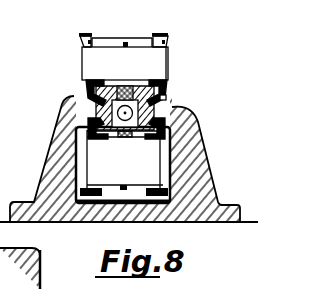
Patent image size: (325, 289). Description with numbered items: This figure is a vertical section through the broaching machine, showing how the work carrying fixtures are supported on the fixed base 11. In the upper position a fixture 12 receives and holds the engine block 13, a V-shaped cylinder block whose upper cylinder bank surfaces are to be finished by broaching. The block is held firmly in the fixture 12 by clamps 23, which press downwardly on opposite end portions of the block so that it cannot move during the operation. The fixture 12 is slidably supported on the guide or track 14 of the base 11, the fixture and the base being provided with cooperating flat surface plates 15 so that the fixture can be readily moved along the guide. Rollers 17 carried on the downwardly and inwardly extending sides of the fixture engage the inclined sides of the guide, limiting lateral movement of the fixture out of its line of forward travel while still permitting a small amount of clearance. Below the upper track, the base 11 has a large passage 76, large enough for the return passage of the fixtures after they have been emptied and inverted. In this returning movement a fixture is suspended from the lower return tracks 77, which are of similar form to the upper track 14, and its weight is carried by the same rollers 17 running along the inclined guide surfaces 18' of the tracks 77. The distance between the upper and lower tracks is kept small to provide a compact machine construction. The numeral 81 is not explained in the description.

The fixed base 11 is at (192, 141).
The fixture 12 is at (163, 58).
The engine block 13 is at (117, 40).
The clamps 23 is at (90, 33).
The flat surface plates 15 is at (168, 80).
The guide or track 14 is at (168, 90).
The slot 81 is at (183, 103).
The lower return tracks 77 is at (185, 118).
The rollers 17 is at (92, 125).
The inclined guide surfaces 18' is at (123, 151).
The passage 76 is at (114, 197).